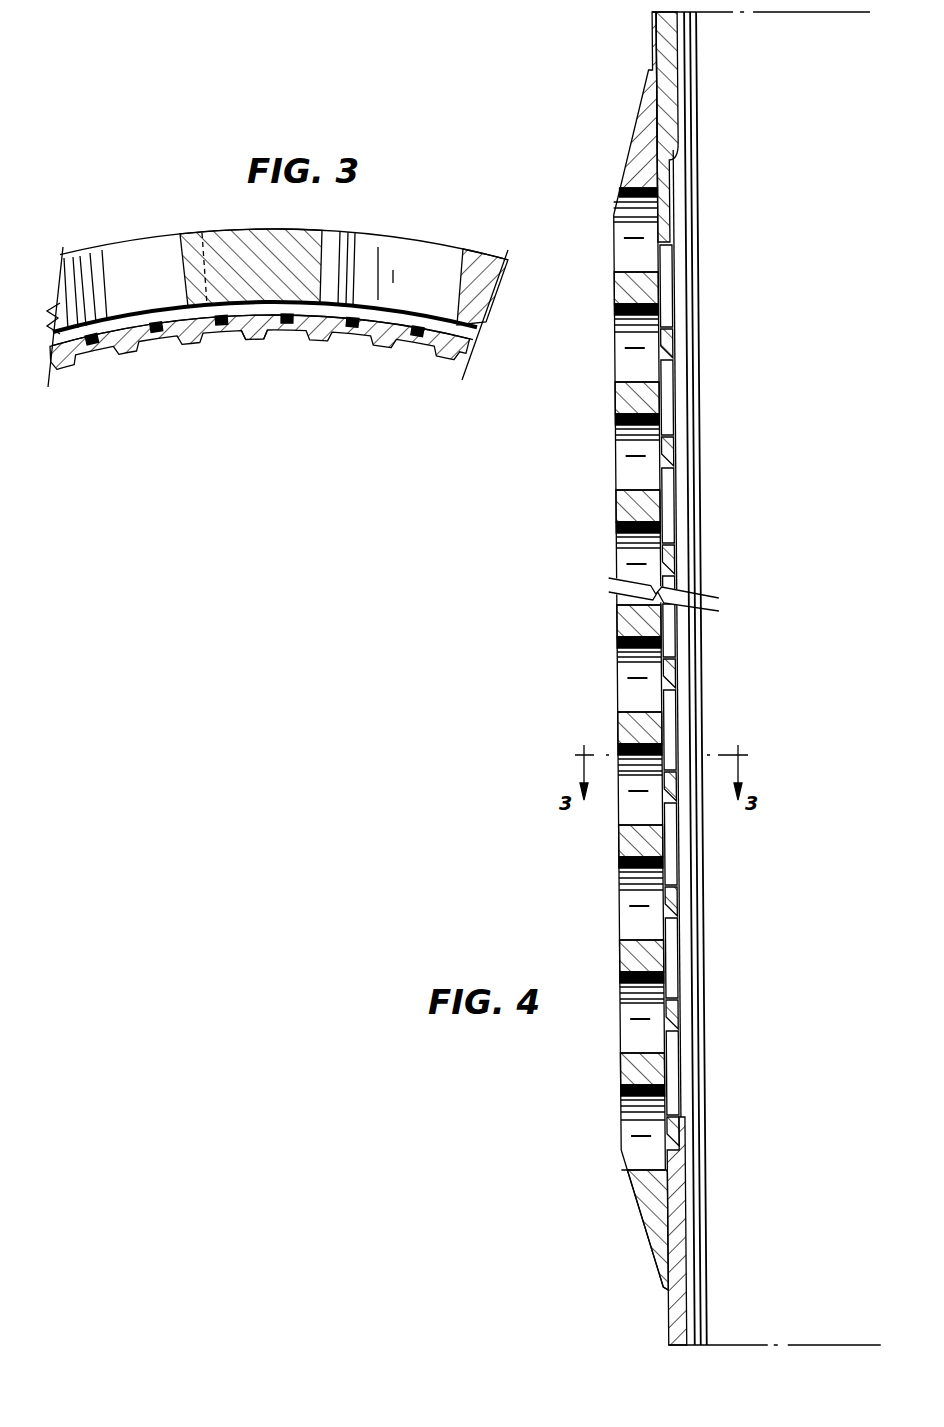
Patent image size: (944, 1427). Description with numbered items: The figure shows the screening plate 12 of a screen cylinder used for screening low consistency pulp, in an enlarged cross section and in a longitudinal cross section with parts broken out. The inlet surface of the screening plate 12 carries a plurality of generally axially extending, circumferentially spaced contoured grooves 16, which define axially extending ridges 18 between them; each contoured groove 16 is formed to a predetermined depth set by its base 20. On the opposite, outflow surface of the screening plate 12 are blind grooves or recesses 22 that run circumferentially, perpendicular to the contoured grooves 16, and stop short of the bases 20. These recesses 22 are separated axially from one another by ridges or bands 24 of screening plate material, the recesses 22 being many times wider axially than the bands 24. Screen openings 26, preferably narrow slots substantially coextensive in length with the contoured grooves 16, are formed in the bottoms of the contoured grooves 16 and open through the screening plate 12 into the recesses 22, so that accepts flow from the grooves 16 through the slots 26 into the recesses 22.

In FIG. 4, the screening plate 12 is at (697, 68).
In FIG. 3, the contoured grooves 16 is at (224, 343).
In FIG. 3, the ridges 18 is at (262, 343).
In FIG. 3, the bases 20 is at (153, 343).
In FIG. 3, the grooves 22 is at (182, 314).
In FIG. 4, the grooves 22 is at (667, 262).
In FIG. 3, the bands 24 is at (110, 316).
In FIG. 4, the bands 24 is at (664, 337).
In FIG. 3, the screen openings 26 is at (357, 343).